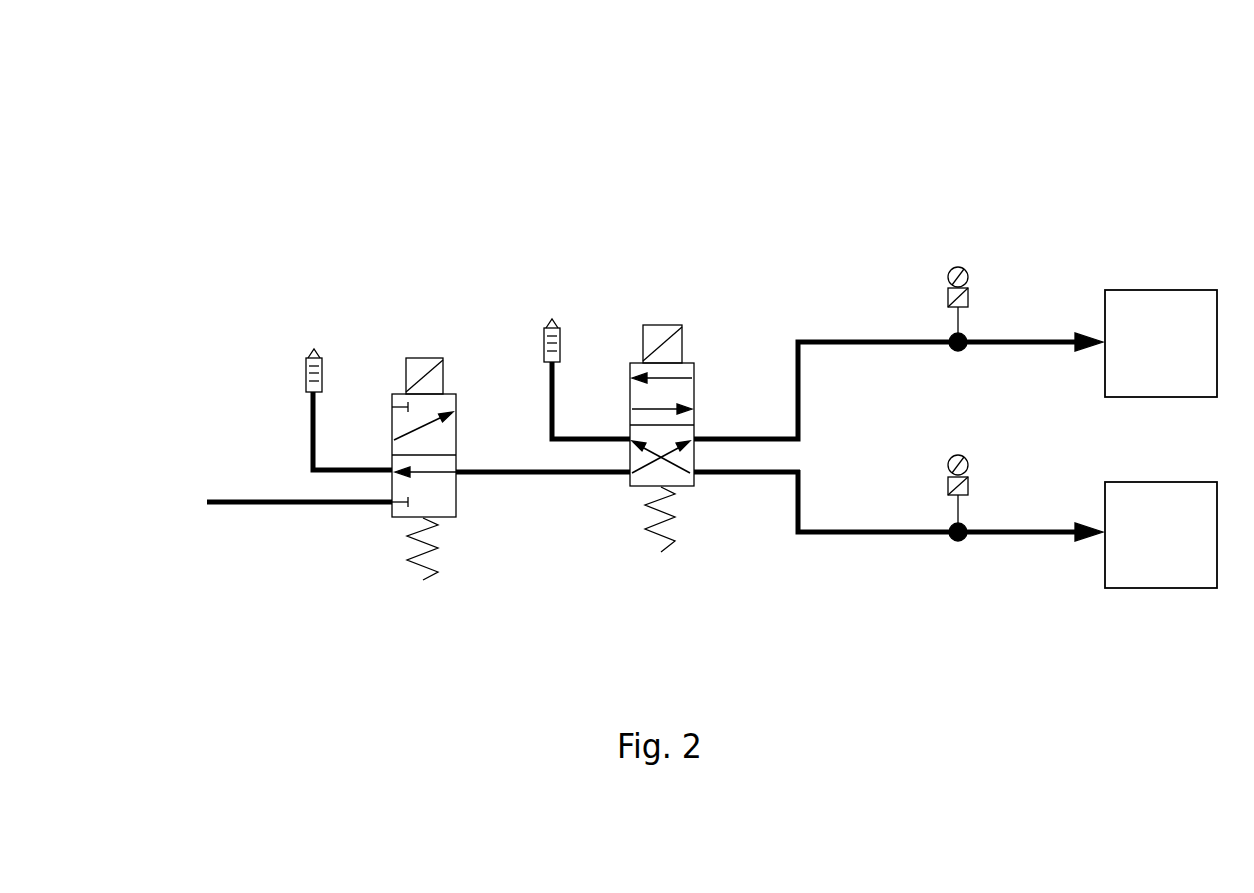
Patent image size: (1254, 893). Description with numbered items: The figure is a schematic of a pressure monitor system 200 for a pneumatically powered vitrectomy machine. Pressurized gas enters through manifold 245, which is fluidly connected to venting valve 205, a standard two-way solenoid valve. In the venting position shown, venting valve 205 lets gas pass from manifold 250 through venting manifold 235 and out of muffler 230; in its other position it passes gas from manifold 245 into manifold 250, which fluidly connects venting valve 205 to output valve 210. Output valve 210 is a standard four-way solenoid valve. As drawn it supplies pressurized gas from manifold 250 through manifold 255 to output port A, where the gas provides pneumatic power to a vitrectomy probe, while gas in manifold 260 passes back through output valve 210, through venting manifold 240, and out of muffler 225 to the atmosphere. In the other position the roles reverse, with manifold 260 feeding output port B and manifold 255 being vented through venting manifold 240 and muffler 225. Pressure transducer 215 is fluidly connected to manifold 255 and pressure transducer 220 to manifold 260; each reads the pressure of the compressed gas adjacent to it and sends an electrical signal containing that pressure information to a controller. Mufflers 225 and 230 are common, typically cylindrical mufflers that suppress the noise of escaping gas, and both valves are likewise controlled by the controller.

The pneumatic control system 200 is at (253, 166).
The venting valve 205 is at (436, 338).
The output valve 210 is at (692, 314).
The pressure transducer 215 is at (986, 268).
The pressure transducer 220 is at (986, 455).
The muffler 225 is at (565, 312).
The muffler 230 is at (290, 365).
The venting manifold 235 is at (295, 429).
The venting manifold 240 is at (583, 426).
The manifold 245 is at (260, 518).
The manifold 250 is at (564, 490).
The manifold 255 is at (865, 325).
The manifold 260 is at (830, 546).